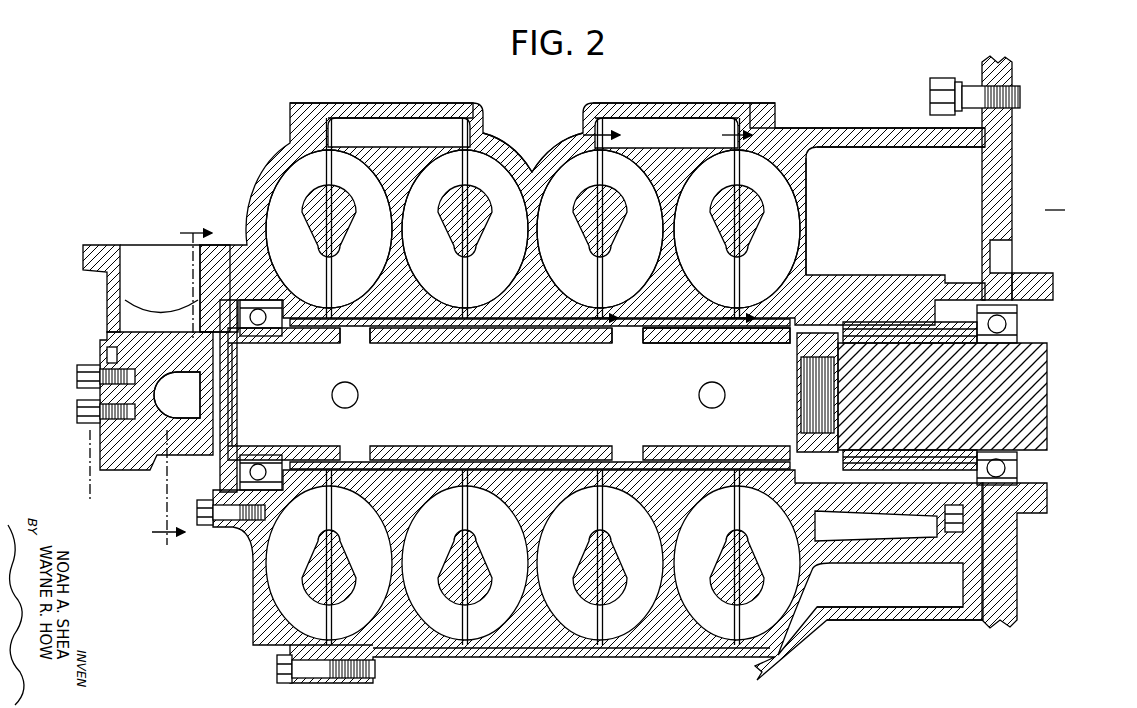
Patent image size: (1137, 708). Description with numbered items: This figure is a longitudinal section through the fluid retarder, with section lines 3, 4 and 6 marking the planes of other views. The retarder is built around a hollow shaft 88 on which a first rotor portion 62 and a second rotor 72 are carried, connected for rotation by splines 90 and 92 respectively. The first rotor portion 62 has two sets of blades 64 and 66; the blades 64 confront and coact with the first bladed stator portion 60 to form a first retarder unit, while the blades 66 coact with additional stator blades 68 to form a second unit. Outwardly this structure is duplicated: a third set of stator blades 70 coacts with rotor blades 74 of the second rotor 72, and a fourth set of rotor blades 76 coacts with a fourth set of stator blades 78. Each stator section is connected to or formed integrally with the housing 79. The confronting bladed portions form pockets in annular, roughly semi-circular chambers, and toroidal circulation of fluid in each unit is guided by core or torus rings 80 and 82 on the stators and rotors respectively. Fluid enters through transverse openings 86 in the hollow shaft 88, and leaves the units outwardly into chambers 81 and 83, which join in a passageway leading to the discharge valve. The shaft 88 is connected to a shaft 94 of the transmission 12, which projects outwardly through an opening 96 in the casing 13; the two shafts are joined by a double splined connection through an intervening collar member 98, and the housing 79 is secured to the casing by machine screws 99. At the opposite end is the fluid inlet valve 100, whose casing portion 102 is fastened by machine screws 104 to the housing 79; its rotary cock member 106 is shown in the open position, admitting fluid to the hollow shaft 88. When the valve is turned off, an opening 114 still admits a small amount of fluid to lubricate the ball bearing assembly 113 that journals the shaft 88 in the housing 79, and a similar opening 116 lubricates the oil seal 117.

The transmission 12 is at (1055, 202).
The casing 13 is at (1008, 175).
The first bladed stator portion 60 is at (785, 140).
The first rotor portion 62 is at (667, 148).
The rotor blades 64 is at (700, 172).
The rotor blades 66 is at (620, 165).
The stator blades 68 is at (568, 170).
The stator blades 70 is at (485, 170).
The second rotor 72 is at (402, 150).
The rotor blades 74 is at (440, 165).
The rotor blades 76 is at (340, 162).
The stator blades 78 is at (283, 180).
The housing 79 is at (860, 128).
The core or torus rings 80 is at (312, 243).
The chamber 81 is at (660, 125).
The core or torus rings 82 is at (346, 243).
The chamber 83 is at (368, 125).
The transverse openings 86 is at (455, 396).
The hollow shaft 88 is at (300, 345).
The splines 90 is at (686, 330).
The splines 92 is at (410, 330).
The shaft 94 is at (1027, 397).
The opening 96 is at (1037, 307).
The collar member 98 is at (883, 345).
The machine screws 99 is at (940, 78).
The fluid inlet valve 100 is at (67, 358).
The casing portion 102 is at (107, 290).
The machine screws 104 is at (203, 530).
The cock member 106 is at (205, 398).
The ball bearing assembly 113 is at (247, 262).
The opening 114 is at (192, 330).
The opening 116 is at (128, 345).
The oil seal 117 is at (118, 360).
The section line 3- 3 is at (738, 242).
The section line 4- 4 is at (601, 242).
The section line 6- 6 is at (182, 386).